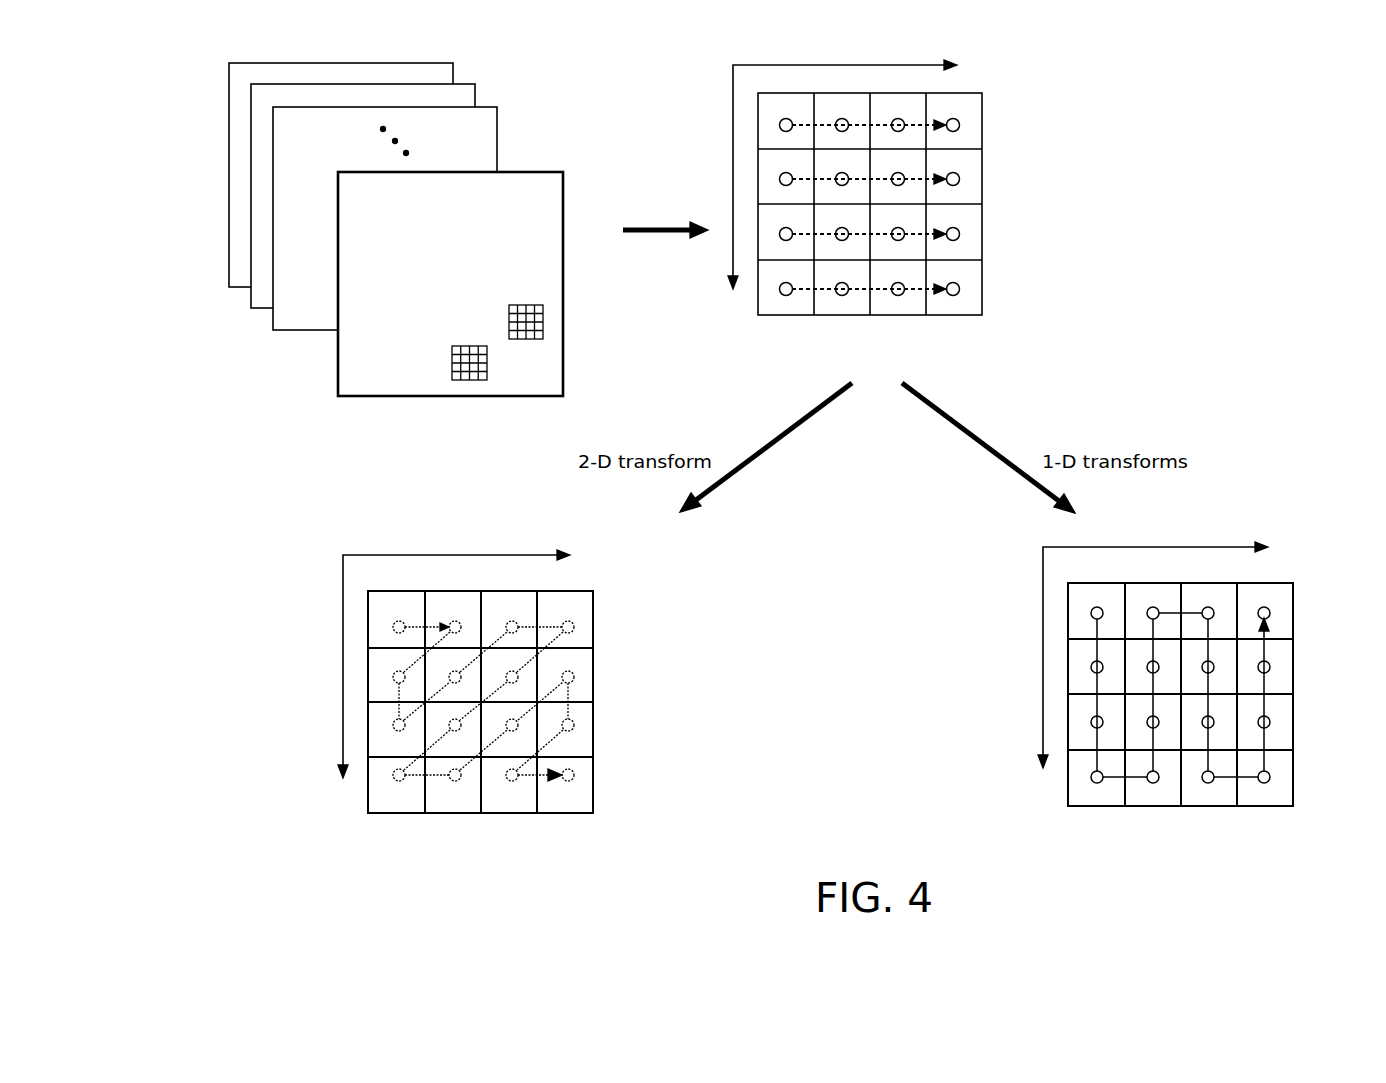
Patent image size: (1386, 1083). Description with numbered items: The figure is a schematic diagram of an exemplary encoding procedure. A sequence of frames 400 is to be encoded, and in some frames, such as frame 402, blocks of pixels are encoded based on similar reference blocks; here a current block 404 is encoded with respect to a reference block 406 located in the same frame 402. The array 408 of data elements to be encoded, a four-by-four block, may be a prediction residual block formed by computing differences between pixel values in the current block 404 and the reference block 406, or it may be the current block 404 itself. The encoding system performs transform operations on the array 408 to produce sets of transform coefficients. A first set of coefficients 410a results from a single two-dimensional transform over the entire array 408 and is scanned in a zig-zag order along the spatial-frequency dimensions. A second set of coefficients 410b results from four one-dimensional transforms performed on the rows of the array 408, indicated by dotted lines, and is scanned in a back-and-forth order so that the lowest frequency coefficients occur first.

The sequence of frames 400 is at (422, 247).
The frame 402 is at (476, 305).
The current block 404 is at (565, 321).
The reference block 406 is at (465, 396).
The array of data elements 408 is at (1014, 297).
The set of coefficients 410a is at (613, 783).
The set of coefficients 410b is at (1312, 773).